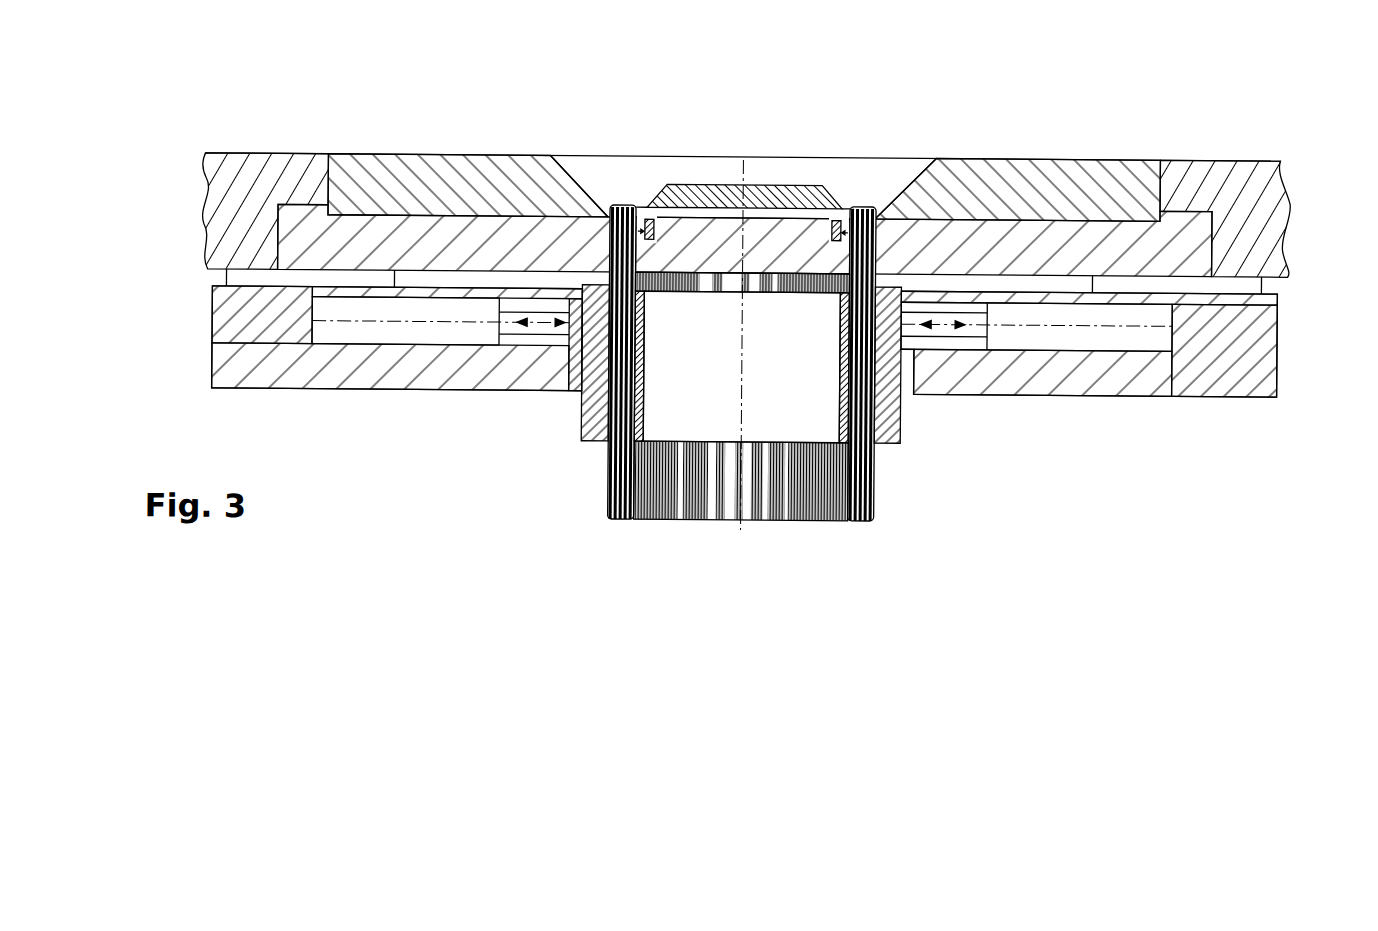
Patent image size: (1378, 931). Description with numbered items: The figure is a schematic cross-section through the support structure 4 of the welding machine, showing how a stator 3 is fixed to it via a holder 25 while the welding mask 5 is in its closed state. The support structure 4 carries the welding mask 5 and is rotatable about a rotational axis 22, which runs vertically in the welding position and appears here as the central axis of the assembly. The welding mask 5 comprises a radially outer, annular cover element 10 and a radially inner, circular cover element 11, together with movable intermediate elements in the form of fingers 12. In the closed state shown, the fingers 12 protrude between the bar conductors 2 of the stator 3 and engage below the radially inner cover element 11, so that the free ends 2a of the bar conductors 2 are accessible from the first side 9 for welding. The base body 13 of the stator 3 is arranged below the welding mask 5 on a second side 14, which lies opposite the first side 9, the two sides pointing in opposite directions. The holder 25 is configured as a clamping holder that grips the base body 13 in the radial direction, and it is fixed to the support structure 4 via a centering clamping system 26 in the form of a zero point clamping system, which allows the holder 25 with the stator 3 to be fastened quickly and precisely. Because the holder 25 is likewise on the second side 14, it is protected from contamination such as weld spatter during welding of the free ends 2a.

The bar conductors 2 is at (612, 156).
The free ends 2a is at (743, 187).
The stator 3 is at (582, 537).
The support structure 4 is at (1232, 165).
The welding mask 5 is at (1115, 86).
The first side 9 is at (461, 155).
The radially outer annular cover element 10 is at (1076, 178).
The radially inner circular cover element 11 is at (790, 203).
The fingers 12 is at (853, 212).
The base body 13 is at (895, 409).
The second side 14 is at (460, 273).
The rotational axis 22 is at (745, 150).
The holder 25 is at (1291, 274).
The centering clamping system 26 is at (253, 287).